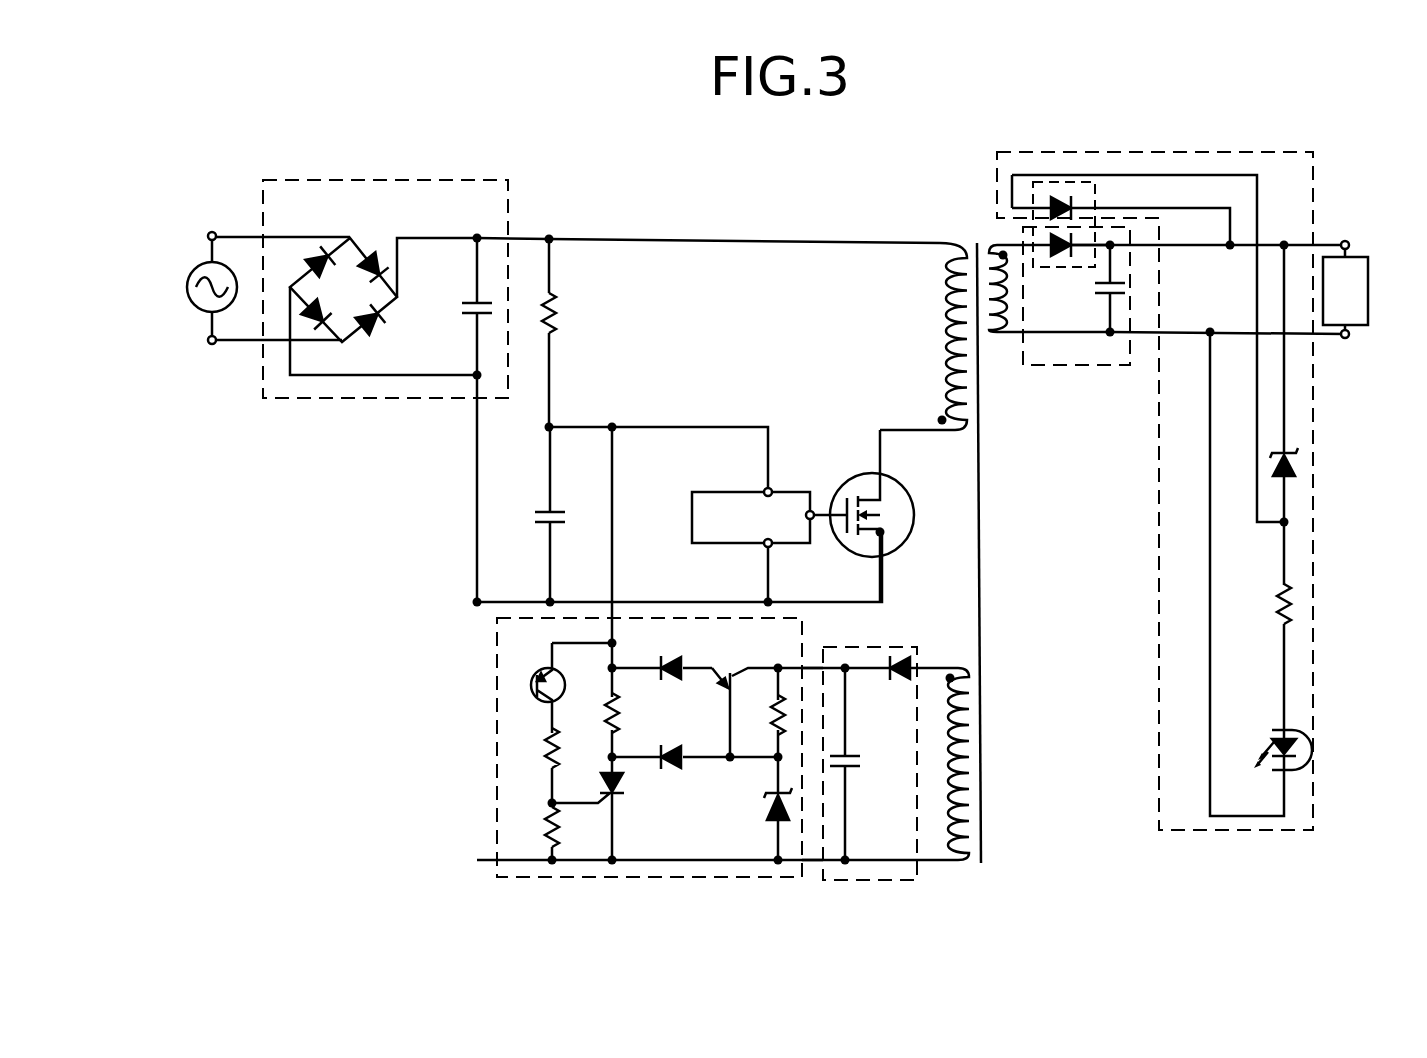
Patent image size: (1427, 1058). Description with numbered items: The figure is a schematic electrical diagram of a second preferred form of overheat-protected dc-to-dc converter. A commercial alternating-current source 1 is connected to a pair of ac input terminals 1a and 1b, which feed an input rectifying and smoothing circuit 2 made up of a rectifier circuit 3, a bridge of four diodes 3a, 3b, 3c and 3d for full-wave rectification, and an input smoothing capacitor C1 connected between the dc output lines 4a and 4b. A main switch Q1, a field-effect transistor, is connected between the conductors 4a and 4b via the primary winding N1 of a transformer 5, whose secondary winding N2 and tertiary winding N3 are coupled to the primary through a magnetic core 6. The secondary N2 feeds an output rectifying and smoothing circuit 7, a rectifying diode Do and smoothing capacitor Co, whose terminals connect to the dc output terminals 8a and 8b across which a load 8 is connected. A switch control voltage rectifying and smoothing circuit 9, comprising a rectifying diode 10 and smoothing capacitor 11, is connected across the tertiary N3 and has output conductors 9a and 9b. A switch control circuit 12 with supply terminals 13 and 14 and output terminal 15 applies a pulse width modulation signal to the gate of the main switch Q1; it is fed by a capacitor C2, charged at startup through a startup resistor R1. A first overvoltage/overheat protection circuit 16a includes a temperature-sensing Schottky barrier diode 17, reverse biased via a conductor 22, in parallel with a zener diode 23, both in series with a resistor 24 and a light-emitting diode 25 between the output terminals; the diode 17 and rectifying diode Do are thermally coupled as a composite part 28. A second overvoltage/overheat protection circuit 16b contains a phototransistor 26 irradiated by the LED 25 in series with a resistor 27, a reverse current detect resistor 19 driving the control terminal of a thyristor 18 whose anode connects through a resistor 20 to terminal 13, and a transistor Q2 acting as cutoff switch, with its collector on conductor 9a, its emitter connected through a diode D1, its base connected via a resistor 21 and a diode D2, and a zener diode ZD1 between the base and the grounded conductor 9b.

The commercial alternating-current source 1 is at (187, 292).
The ac input terminal 1a is at (210, 230).
The ac input terminal 1b is at (212, 346).
The input rectifying and smoothing circuit 2 is at (437, 178).
The rectifier circuit 3 is at (345, 291).
The diode 3a is at (384, 252).
The diode 3b is at (378, 335).
The diode 3c is at (324, 306).
The diode 3d is at (308, 262).
The dc output line 4a is at (522, 236).
The dc output line 4b is at (477, 425).
The transformer 5 is at (793, 506).
The magnetic core 6 is at (980, 485).
The output rectifying and smoothing circuit 7 is at (1076, 317).
The load 8 is at (1368, 292).
The dc output terminal 8a is at (1345, 241).
The dc output terminal 8b is at (1345, 340).
The switch control voltage rectifying and smoothing circuit 9 is at (878, 746).
The output conductor 9a is at (812, 668).
The conductor 9b is at (812, 880).
The rectifying diode 10 is at (900, 682).
The smoothing capacitor 11 is at (851, 760).
The switch control circuit 12 is at (692, 520).
The supply voltage input terminal 13 is at (766, 488).
The supply voltage input terminal 14 is at (766, 547).
The output terminal 15 is at (812, 511).
The first overvoltage/overheat protection circuit 16a is at (1178, 472).
The second overvoltage/overheat protection circuit 16b is at (616, 750).
The Schottky barrier diode 17 is at (1060, 198).
The thyristor 18 is at (601, 780).
The reverse current detect resistor 19 is at (545, 832).
The resistor 20 is at (620, 712).
The resistor 21 is at (778, 713).
The conductor 22 is at (1234, 206).
The zener diode 23 is at (1298, 466).
The resistor 24 is at (1292, 604).
The light-emitting diode 25 is at (1300, 750).
The phototransistor 26 is at (545, 668).
The resistor 27 is at (546, 753).
The composite part 28 is at (1095, 185).
The input smoothing capacitor C1 is at (477, 303).
The capacitor C2 is at (548, 508).
The startup resistor R1 is at (557, 306).
The main switch Q1 is at (896, 481).
The transistor Q2 is at (743, 668).
The diode D1 is at (662, 654).
The diode D2 is at (695, 780).
The zener diode ZD1 is at (770, 799).
The primary winding N1 is at (942, 352).
The secondary winding N2 is at (1003, 337).
The tertiary winding N3 is at (975, 712).
The rectifying diode Do is at (1058, 258).
The smoothing capacitor Co is at (1110, 286).